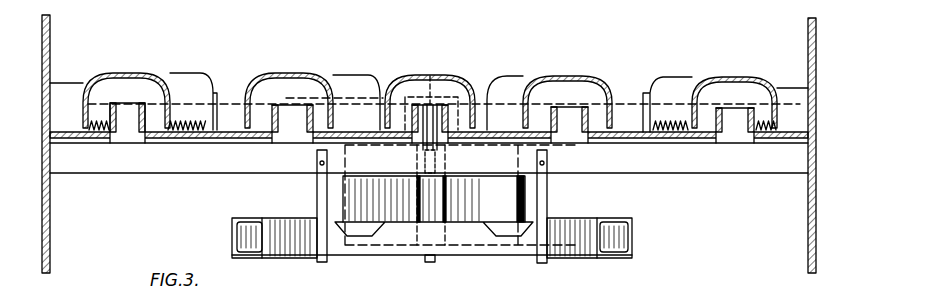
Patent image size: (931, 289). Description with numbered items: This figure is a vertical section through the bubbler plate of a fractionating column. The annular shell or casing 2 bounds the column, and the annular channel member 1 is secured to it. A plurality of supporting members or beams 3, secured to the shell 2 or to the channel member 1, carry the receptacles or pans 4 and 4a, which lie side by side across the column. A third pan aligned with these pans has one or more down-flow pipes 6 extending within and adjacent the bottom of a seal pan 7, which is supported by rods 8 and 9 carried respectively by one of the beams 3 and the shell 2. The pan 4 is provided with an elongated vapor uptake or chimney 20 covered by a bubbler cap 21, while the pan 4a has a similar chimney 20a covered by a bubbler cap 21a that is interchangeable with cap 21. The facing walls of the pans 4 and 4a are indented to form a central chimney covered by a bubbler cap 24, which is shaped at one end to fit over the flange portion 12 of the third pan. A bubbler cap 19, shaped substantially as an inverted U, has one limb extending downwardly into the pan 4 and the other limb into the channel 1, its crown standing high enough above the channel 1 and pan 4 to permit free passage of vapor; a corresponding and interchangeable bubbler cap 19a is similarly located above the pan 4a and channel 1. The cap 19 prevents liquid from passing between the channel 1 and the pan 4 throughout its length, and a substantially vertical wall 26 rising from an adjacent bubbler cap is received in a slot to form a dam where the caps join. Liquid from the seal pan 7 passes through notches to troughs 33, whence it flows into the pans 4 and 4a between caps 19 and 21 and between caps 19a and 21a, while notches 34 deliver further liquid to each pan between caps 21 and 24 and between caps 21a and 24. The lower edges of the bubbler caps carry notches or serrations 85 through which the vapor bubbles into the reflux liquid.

The annular channel member 1 is at (72, 136).
The annular shell or casing 2 is at (50, 233).
The supporting members or beams 3 is at (140, 165).
The receptacle or pan 4 is at (630, 142).
The receptacle or pan 4a is at (208, 142).
The down-flow pipe 6 is at (434, 199).
The seal pan 7 is at (498, 256).
The rod 8 is at (317, 193).
The rod 9 is at (432, 198).
The portion of flange 12 is at (455, 98).
The bubbler cap 19 is at (738, 77).
The bubbler cap 19a is at (141, 73).
The vapor uptake or chimney 20 is at (568, 116).
The vapor uptake or chimney 20a is at (291, 115).
The bubbler cap 21 is at (605, 88).
The bubbler cap 21a is at (262, 80).
The bubbler cap 24 is at (440, 77).
The substantially vertical wall 26 is at (425, 92).
The trough 33 is at (247, 250).
The notch 34 is at (370, 224).
The notches or serrations 85 is at (672, 122).